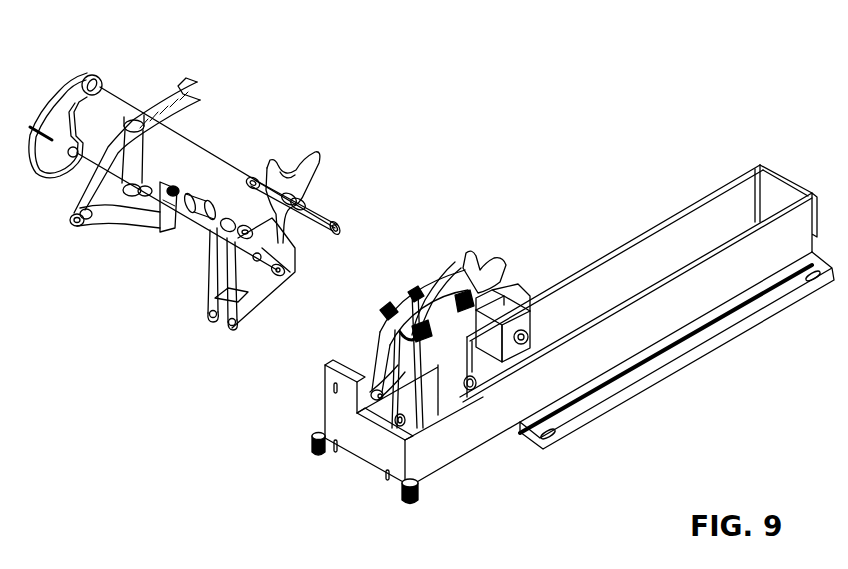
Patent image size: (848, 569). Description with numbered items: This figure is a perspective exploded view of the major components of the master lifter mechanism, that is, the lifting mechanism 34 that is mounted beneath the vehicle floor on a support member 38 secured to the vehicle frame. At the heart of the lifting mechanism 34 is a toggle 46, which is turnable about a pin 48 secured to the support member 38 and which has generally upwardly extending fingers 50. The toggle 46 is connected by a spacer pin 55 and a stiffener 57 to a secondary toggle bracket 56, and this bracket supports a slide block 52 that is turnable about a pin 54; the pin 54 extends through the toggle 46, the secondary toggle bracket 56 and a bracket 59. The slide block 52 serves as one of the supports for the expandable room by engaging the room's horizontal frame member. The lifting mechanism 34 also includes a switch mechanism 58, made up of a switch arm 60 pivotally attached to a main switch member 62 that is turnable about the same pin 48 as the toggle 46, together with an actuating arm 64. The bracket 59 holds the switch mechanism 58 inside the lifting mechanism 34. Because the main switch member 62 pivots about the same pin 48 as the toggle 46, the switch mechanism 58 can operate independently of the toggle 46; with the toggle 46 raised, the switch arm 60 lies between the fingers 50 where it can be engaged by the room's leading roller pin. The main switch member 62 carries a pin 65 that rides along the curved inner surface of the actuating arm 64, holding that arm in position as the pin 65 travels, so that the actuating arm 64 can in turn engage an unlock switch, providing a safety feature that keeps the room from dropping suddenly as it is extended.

The lifting mechanism 34 is at (556, 200).
The support member 38 is at (764, 134).
The toggle 46 is at (205, 306).
The pin 48 is at (474, 391).
The fingers 50 is at (282, 157).
The slide block 52 is at (521, 316).
The pin 54 is at (330, 214).
The spacer pin 55 is at (207, 182).
The secondary toggle bracket 56 is at (258, 311).
The stiffener 57 is at (213, 316).
The switch mechanism 58 is at (228, 118).
The bracket 59 is at (76, 70).
The switch arm 60 is at (197, 88).
The main switch member 62 is at (146, 160).
The actuating arm 64 is at (122, 243).
The pin 65 is at (76, 196).